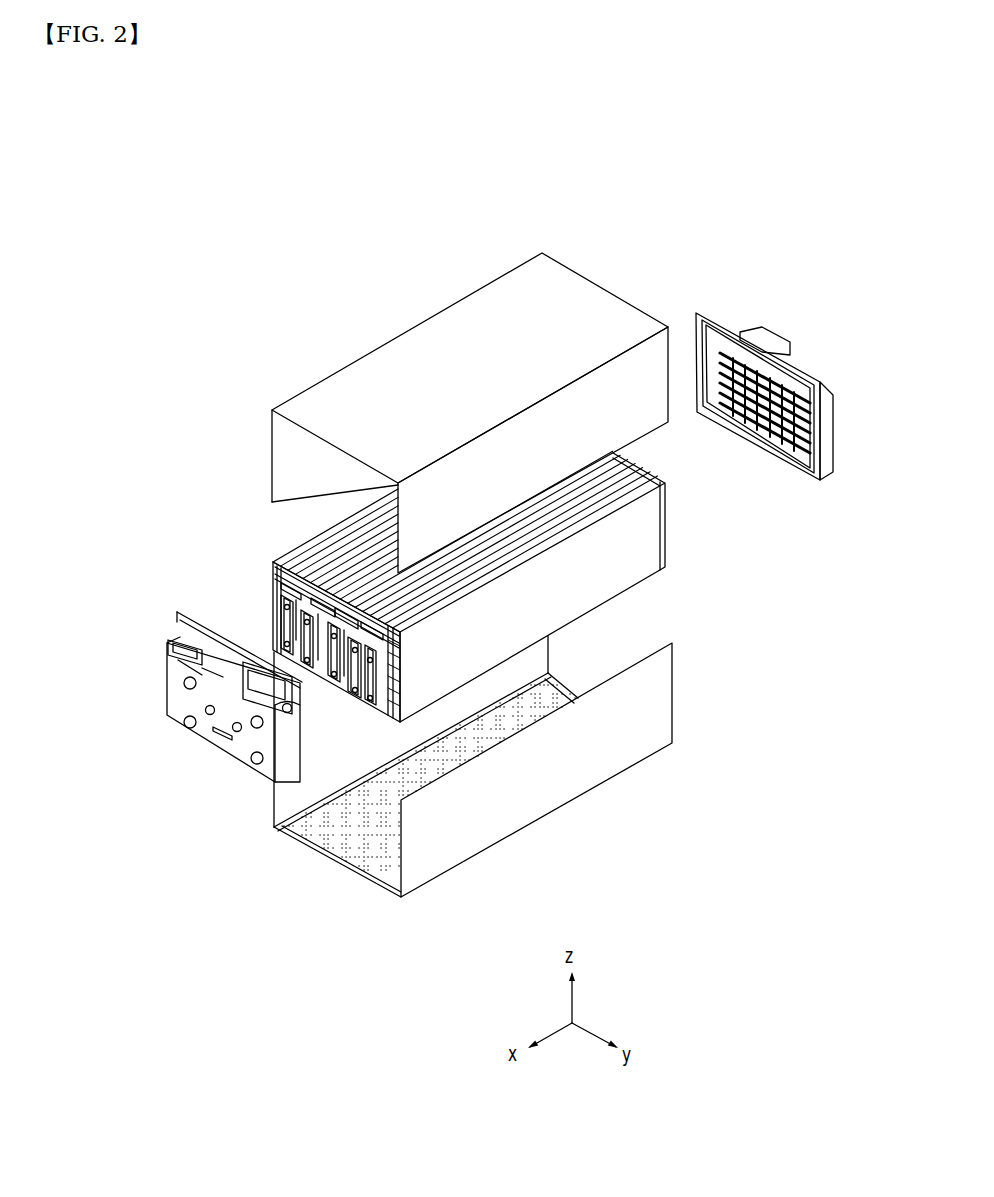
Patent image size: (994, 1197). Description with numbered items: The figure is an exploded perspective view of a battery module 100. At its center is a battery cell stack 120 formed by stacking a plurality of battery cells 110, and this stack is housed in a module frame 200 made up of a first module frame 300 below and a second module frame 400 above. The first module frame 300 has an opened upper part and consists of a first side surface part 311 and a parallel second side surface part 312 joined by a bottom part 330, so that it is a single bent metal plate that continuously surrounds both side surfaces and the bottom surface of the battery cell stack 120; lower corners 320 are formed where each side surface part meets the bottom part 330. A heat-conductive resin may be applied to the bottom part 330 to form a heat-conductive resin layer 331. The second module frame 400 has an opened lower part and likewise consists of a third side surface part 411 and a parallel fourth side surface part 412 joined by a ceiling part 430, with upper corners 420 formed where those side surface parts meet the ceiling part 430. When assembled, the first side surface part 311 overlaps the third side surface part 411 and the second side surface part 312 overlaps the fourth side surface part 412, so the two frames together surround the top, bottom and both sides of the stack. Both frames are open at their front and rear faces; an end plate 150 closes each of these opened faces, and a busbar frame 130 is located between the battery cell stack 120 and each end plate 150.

The battery module 100 is at (226, 288).
The battery cell 110 is at (621, 566).
The battery cell stack 120 is at (236, 540).
The busbar frame 130 is at (271, 605).
The end plate 150 is at (207, 733).
The module frame 200 is at (795, 545).
The first module frame 300 is at (680, 698).
The first side surface part 311 is at (367, 737).
The second side surface part 312 is at (470, 823).
The lower corner 320 is at (275, 830).
The bottom part 330 is at (560, 697).
The heat-conductive resin layer 331 is at (463, 743).
The second module frame 400 is at (657, 431).
The third side surface part 411 is at (272, 430).
The fourth side surface part 412 is at (413, 518).
The upper corner 420 is at (490, 432).
The ceiling part 430 is at (504, 312).